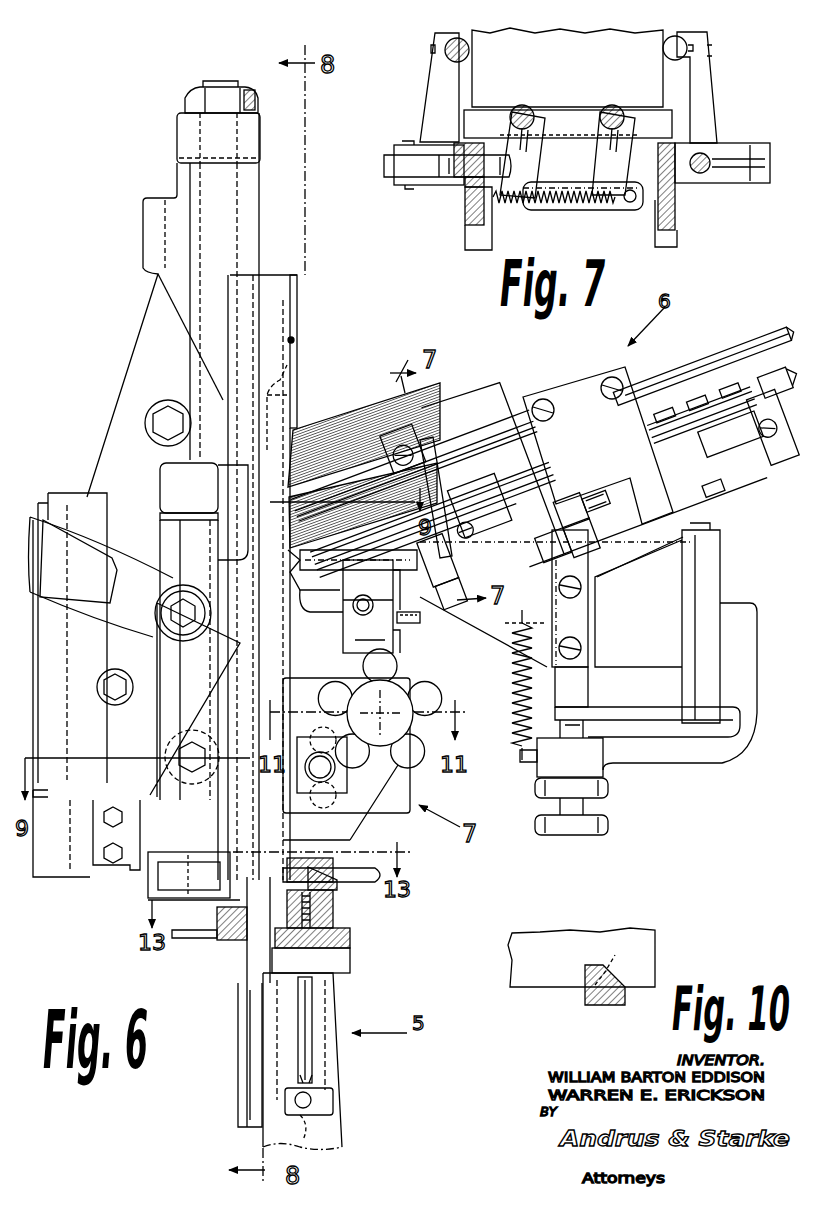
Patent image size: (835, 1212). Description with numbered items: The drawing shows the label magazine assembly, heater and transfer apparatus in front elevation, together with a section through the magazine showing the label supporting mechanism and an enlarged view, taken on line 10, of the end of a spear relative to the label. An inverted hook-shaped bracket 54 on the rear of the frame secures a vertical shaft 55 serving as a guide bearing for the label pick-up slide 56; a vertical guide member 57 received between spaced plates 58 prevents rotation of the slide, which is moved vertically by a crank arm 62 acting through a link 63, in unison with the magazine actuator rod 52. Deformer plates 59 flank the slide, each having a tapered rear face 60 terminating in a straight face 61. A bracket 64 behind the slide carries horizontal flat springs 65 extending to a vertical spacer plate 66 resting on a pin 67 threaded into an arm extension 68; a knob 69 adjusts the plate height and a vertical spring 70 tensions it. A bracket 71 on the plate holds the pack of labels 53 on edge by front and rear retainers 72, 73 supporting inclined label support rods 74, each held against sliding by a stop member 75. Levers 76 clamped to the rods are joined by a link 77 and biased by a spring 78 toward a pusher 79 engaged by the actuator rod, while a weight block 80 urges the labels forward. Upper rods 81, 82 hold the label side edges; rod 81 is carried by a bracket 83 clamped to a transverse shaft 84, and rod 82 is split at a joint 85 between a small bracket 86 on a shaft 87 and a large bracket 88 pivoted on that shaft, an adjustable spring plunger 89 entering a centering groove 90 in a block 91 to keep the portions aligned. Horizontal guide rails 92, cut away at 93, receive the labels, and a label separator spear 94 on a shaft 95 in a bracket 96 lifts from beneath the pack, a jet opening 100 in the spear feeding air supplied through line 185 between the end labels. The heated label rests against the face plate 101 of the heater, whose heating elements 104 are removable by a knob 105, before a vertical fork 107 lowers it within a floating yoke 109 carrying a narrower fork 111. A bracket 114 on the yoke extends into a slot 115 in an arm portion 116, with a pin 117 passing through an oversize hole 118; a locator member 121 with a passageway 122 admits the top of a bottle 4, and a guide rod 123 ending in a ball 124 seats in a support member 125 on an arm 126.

In FIG. 6, the bottle 4 is at (343, 1140).
In FIG. 6, the clamp 10 is at (361, 606).
In FIG. 7, the magazine actuator rod 52 is at (385, 166).
In FIG. 7, the label 53 is at (533, 40).
In FIG. 6, the label 53 is at (360, 415).
In FIG. 10, the label 53 is at (660, 930).
In FIG. 6, the bracket 54 is at (182, 135).
In FIG. 6, the vertical shaft 55 is at (195, 362).
In FIG. 6, the label pick-up slide 56 is at (290, 362).
In FIG. 6, the vertical guide member 57 is at (68, 878).
In FIG. 6, the spaced plates 58 is at (92, 872).
In FIG. 6, the deformer plates 59 is at (290, 278).
In FIG. 6, the rear wall or face 60 is at (298, 308).
In FIG. 6, the straight face 61 is at (288, 340).
In FIG. 6, the crank arm 62 is at (120, 617).
In FIG. 6, the link 63 is at (165, 712).
In FIG. 6, the bracket 64 is at (750, 762).
In FIG. 6, the horizontal flat springs 65 is at (668, 550).
In FIG. 6, the vertical spacer plate 66 is at (590, 688).
In FIG. 6, the vertical pin 67 is at (560, 806).
In FIG. 6, the arm extension 68 is at (645, 755).
In FIG. 6, the knob 69 is at (608, 832).
In FIG. 6, the vertical spring 70 is at (515, 730).
In FIG. 7, the bracket 71 is at (466, 243).
In FIG. 6, the bracket 71 is at (590, 632).
In FIG. 7, the front retainer 72 is at (645, 112).
In FIG. 6, the front retainer 72 is at (490, 500).
In FIG. 6, the rear retainer 73 is at (720, 450).
In FIG. 7, the label support rods 74 is at (608, 106).
In FIG. 6, the label support rods 74 is at (785, 396).
In FIG. 6, the stop member 75 is at (770, 470).
In FIG. 7, the lever 76 is at (600, 162).
In FIG. 6, the lever 76 is at (458, 500).
In FIG. 7, the link 77 is at (608, 210).
In FIG. 7, the spring 78 is at (510, 208).
In FIG. 7, the pusher 79 is at (492, 155).
In FIG. 6, the weight block 80 is at (500, 382).
In FIG. 7, the upper rod 81 is at (470, 52).
In FIG. 7, the upper rod 82 is at (662, 48).
In FIG. 6, the upper rod 82 is at (745, 338).
In FIG. 7, the bracket 83 is at (435, 92).
In FIG. 7, the transverse shaft 84 is at (428, 185).
In FIG. 6, the joint 85 is at (440, 420).
In FIG. 6, the small bracket 86 is at (440, 472).
In FIG. 7, the shaft 87 is at (705, 180).
In FIG. 6, the shaft 87 is at (470, 528).
In FIG. 7, the large bracket 88 is at (705, 86).
In FIG. 6, the large bracket 88 is at (580, 380).
In FIG. 6, the adjustable spring plunger 89 is at (580, 520).
In FIG. 6, the centering groove 90 is at (570, 555).
In FIG. 6, the block 91 is at (540, 580).
In FIG. 6, the horizontal guide rails 92 is at (328, 568).
In FIG. 6, the cut away 93 is at (292, 575).
In FIG. 6, the label separator spear 94 is at (322, 612).
In FIG. 10, the label separator spear 94 is at (588, 1000).
In FIG. 6, the shaft 95 is at (355, 612).
In FIG. 6, the bracket 96 is at (409, 614).
In FIG. 10, the jet opening 100 is at (622, 962).
In FIG. 6, the face plate 101 is at (283, 690).
In FIG. 6, the electric resistance heating elements 104 is at (322, 767).
In FIG. 6, the knob 105 is at (428, 690).
In FIG. 6, the vertical fork 107 is at (240, 1083).
In FIG. 6, the guide frame or floating yoke 109 is at (220, 942).
In FIG. 6, the fork 111 is at (247, 975).
In FIG. 6, the bracket 114 is at (303, 862).
In FIG. 6, the slot 115 is at (290, 870).
In FIG. 6, the arm portion 116 is at (345, 868).
In FIG. 6, the pin 117 is at (338, 880).
In FIG. 6, the hole 118 is at (325, 893).
In FIG. 6, the locator member 121 is at (352, 938).
In FIG. 6, the longitudinal passageway 122 is at (352, 962).
In FIG. 6, the guide rod 123 is at (313, 1010).
In FIG. 6, the ball 124 is at (303, 1140).
In FIG. 6, the support member 125 is at (334, 1105).
In FIG. 6, the arm 126 is at (312, 1083).
In FIG. 6, the line 185 is at (422, 620).